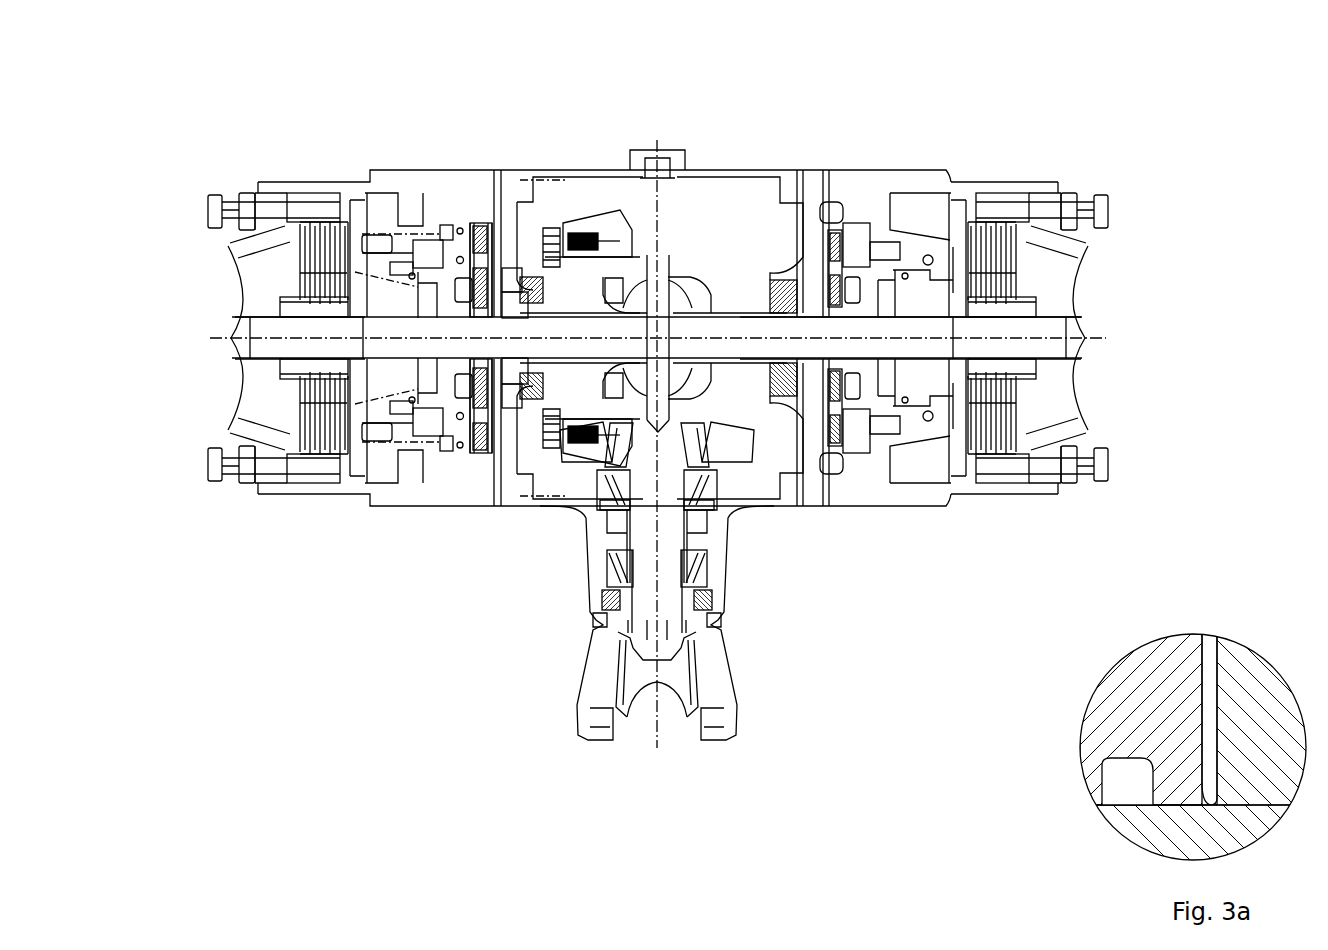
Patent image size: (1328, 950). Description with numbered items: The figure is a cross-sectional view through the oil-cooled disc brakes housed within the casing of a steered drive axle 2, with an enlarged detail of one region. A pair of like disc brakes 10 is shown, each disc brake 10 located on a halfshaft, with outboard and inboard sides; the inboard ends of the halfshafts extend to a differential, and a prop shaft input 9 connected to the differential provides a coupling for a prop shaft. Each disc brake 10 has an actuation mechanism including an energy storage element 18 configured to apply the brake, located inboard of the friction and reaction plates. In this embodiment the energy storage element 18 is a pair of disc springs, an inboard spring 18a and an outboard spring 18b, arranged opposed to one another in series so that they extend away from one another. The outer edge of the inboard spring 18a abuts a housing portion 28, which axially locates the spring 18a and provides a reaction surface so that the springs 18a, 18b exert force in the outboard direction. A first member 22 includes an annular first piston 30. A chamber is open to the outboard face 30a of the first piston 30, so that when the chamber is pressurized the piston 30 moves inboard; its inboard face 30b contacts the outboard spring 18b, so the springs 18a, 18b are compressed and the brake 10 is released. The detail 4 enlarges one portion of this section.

In FIG. 3, the disc brake 10 is at (486, 75).
In FIG. 3, the steered drive axle 2 is at (817, 106).
In FIG. 3, the prop shaft input 9 is at (675, 742).
In FIG. 3, the energy storage element 18 is at (283, 585).
In FIG. 3, the inboard spring 18a is at (487, 437).
In FIG. 3, the outboard spring 18b is at (473, 424).
In FIG. 3, the first member 22 is at (458, 247).
In FIG. 3, the housing portion 28 is at (505, 487).
In FIG. 3, the first piston 30 is at (466, 227).
In FIG. 3, the outboard face 30a is at (452, 256).
In FIG. 3, the inboard face 30b is at (473, 257).
In FIG. 3A, the seal 4 is at (1207, 785).